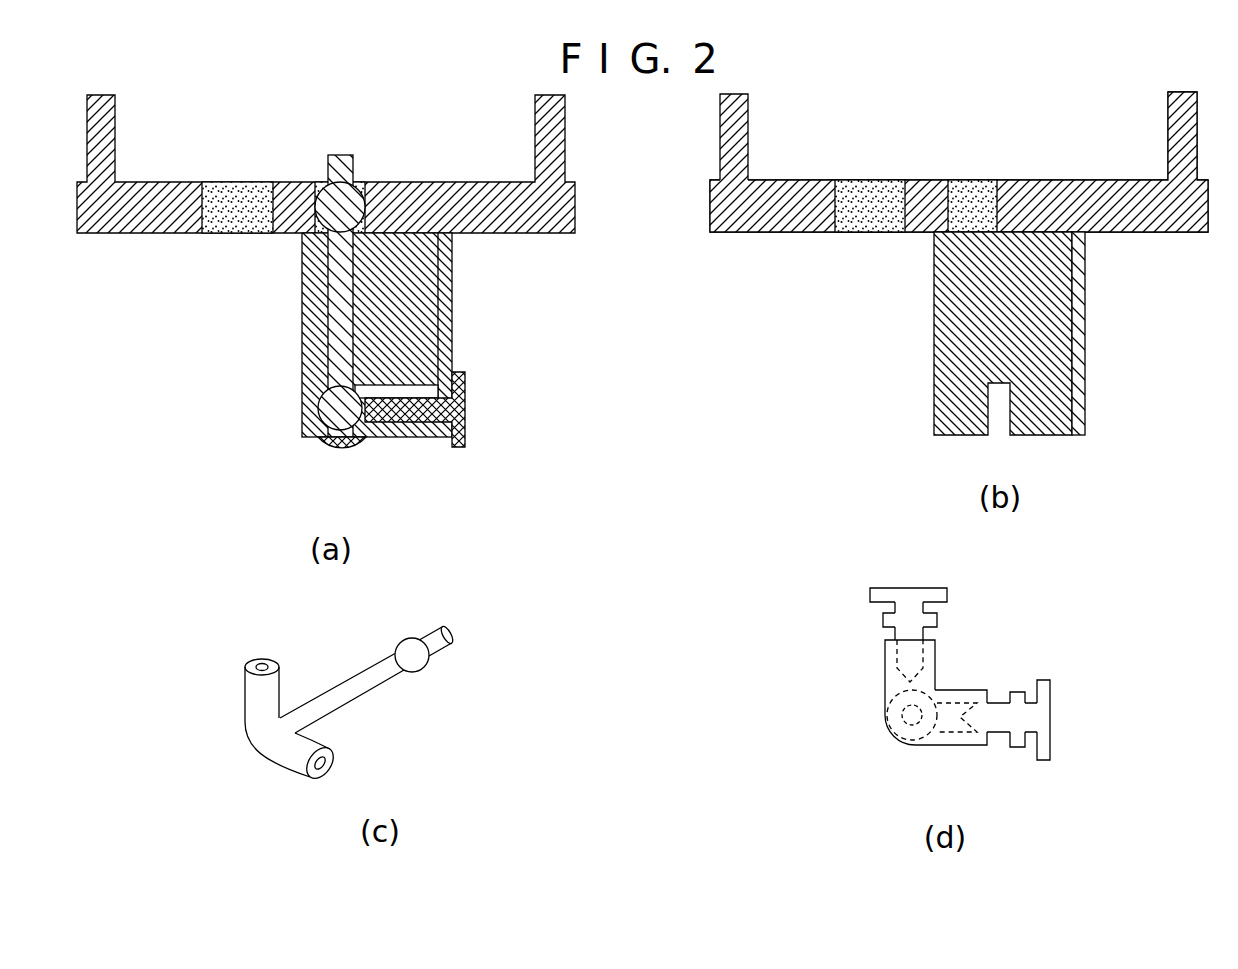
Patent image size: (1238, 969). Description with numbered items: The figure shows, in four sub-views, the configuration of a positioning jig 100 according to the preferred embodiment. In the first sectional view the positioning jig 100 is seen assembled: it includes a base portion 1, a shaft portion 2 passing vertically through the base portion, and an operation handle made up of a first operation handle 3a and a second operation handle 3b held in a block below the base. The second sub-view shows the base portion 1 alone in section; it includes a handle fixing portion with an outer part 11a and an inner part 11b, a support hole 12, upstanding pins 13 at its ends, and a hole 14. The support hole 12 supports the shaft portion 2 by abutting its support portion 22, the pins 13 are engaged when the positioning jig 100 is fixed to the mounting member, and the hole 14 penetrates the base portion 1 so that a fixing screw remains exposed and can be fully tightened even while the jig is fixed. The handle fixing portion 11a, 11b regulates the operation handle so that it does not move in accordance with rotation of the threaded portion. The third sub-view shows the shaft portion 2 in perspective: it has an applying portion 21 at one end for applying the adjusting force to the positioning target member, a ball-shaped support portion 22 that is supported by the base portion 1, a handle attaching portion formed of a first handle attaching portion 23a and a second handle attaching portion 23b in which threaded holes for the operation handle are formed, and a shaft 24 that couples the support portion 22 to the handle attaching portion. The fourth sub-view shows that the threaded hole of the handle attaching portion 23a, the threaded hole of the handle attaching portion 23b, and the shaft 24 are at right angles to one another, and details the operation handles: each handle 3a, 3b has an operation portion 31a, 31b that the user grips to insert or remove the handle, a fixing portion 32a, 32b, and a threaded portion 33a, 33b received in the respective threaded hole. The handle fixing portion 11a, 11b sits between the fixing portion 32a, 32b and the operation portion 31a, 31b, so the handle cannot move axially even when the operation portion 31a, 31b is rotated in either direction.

The base portion 1 is at (535, 235).
The shaft portion 2 is at (318, 345).
The operation handle 3a is at (465, 428).
The operation handle 3b is at (341, 450).
The positioning jig 100 is at (537, 507).
The handle fixing portion 11a is at (1085, 412).
The handle fixing portion 11b is at (934, 413).
The support hole 12 is at (970, 180).
The pin 13 is at (727, 128).
The hole 14 is at (870, 235).
The applying portion 21 is at (455, 640).
The support portion 22 is at (420, 665).
The handle attaching portion 23a is at (252, 686).
The handle attaching portion 23b is at (293, 765).
The shaft 24 is at (352, 685).
The operation portion 31a is at (947, 595).
The operation portion 31b is at (1050, 725).
The fixing portion 32a is at (883, 620).
The fixing portion 32b is at (1018, 747).
The threaded portion 33a is at (915, 657).
The threaded portion 33b is at (985, 715).